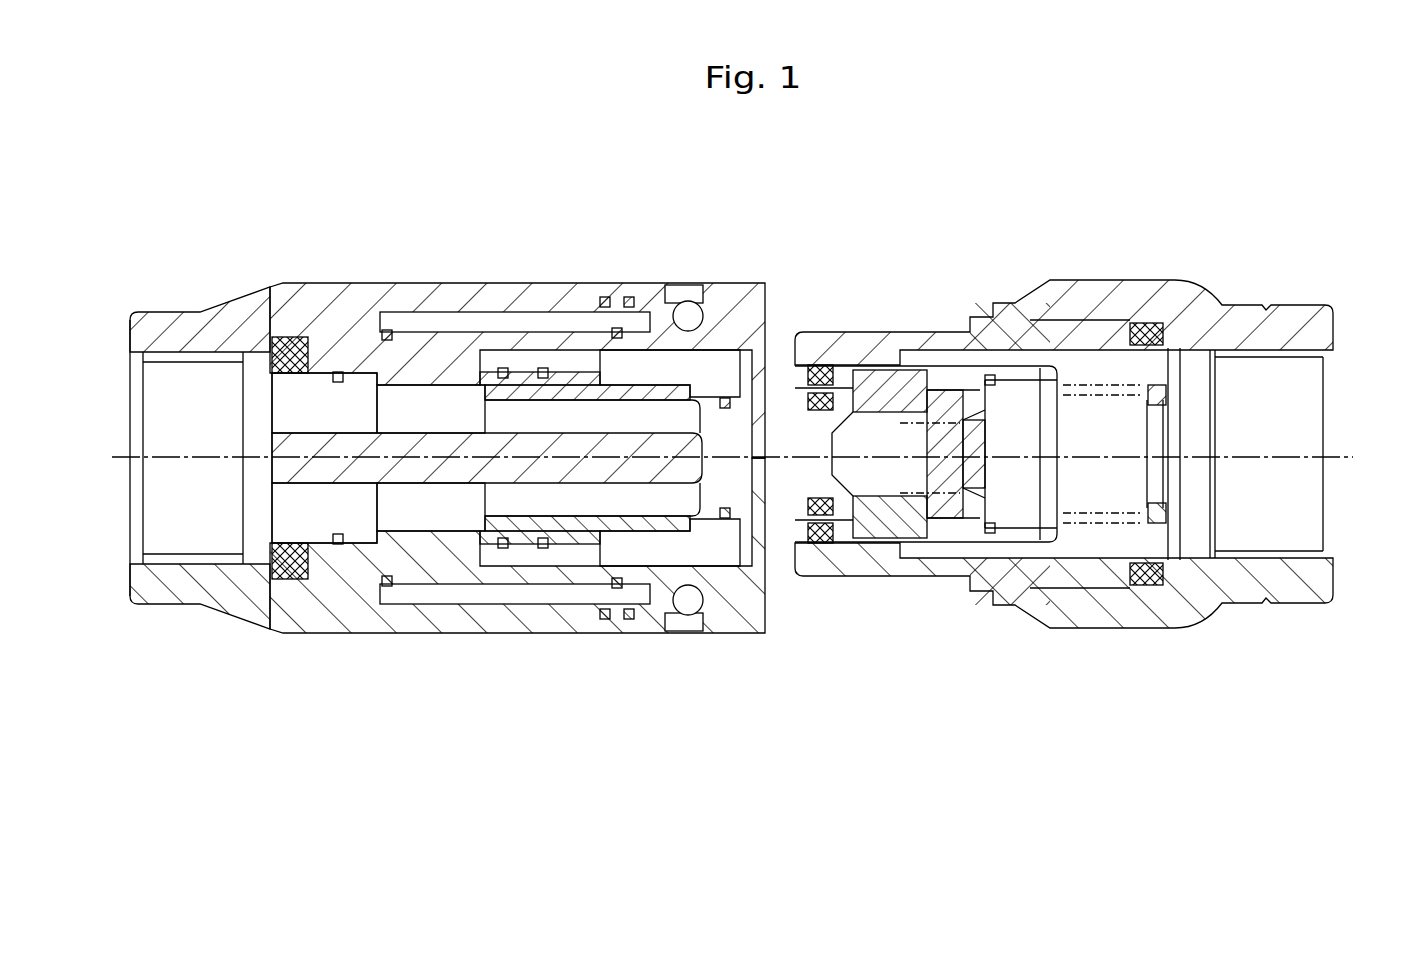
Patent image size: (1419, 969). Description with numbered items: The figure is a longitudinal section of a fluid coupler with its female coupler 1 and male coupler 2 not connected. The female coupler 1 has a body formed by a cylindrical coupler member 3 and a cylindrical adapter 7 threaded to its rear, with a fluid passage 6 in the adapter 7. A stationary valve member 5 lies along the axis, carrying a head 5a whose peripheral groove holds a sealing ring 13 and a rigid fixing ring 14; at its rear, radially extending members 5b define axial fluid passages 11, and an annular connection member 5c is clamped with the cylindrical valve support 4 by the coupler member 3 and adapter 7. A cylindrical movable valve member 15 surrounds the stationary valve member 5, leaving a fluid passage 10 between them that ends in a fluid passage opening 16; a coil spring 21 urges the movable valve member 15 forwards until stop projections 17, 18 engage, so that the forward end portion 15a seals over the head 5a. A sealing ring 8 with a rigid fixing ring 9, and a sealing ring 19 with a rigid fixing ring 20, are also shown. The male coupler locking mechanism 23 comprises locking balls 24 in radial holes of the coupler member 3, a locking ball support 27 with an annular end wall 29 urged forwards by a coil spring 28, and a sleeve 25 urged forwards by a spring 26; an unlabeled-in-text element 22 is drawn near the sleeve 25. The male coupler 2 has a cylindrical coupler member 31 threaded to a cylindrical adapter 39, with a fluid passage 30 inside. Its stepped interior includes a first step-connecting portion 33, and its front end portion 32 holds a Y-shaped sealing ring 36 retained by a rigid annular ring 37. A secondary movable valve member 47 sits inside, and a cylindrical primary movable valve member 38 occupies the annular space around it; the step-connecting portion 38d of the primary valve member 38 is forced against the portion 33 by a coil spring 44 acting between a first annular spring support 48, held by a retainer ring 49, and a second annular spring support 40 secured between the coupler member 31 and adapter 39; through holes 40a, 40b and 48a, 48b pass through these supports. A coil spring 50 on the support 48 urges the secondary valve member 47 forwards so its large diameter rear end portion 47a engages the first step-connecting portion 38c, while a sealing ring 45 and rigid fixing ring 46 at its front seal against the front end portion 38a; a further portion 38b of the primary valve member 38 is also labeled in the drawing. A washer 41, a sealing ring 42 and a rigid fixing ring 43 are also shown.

The female coupler 1 is at (393, 268).
The male coupler 2 is at (1000, 295).
The cylindrical coupler member 3 is at (475, 320).
The cylindrical valve support 4 is at (430, 345).
The stationary valve member 5 is at (420, 443).
The head 5a is at (771, 457).
The radially extending members 5b is at (225, 605).
The annular connection member 5c is at (295, 595).
The fluid passage 6 is at (175, 387).
The cylindrical adapter 7 is at (215, 335).
The sealing ring 8 is at (290, 340).
The rigid fixing ring 9 is at (315, 345).
The fluid passage 10 is at (415, 520).
The fluid passages 11 is at (250, 365).
The sealing ring 13 is at (735, 490).
The rigid fixing ring 14 is at (748, 540).
The cylindrical movable valve member 15 is at (570, 330).
The forward end portion 15a is at (771, 457).
The fluid passage opening 16 is at (673, 505).
The stop projection 17 is at (565, 580).
The stop projection 18 is at (540, 580).
The sealing ring 19 is at (528, 345).
The rigid fixing ring 20 is at (545, 365).
The coil spring 21 is at (447, 600).
The lock ball 22 is at (725, 330).
The male coupler locking mechanism 23 is at (639, 275).
The locking balls 24 is at (687, 303).
The sleeve 25 is at (655, 305).
The spring 26 is at (598, 330).
The locking ball support 27 is at (660, 560).
The coil spring 28 is at (465, 600).
The annular end wall 29 is at (762, 560).
The fluid passage 30 is at (1085, 355).
The cylindrical coupler member 31 is at (913, 353).
The front end portion 32 is at (840, 375).
The first step-connecting portion 33 is at (893, 555).
The sealing ring 36 is at (862, 345).
The rigid annular ring 37 is at (835, 340).
The primary movable valve member 38 is at (1030, 313).
The front end portion 38a is at (835, 560).
The valve body upper portion 38b is at (1075, 300).
The first step-connecting portion 38c is at (960, 330).
The step-connecting portion 38d is at (845, 378).
The cylindrical adapter 39 is at (1282, 300).
The second annular spring support 40 is at (1220, 417).
The through hole 40a is at (1190, 345).
The through hole 40b is at (1172, 430).
The washer 41 is at (1165, 330).
The sealing ring 42 is at (1147, 330).
The rigid fixing ring 43 is at (1127, 317).
The coil spring 44 is at (1165, 605).
The sealing ring 45 is at (860, 545).
The rigid fixing ring 46 is at (813, 343).
The secondary movable valve member 47 is at (890, 372).
The large diameter rear end portion 47a is at (978, 465).
The first annular spring support 48 is at (1062, 590).
The through hole 48a is at (1020, 610).
The through hole 48b is at (1105, 600).
The retainer ring 49 is at (1038, 590).
The coil spring 50 is at (920, 535).